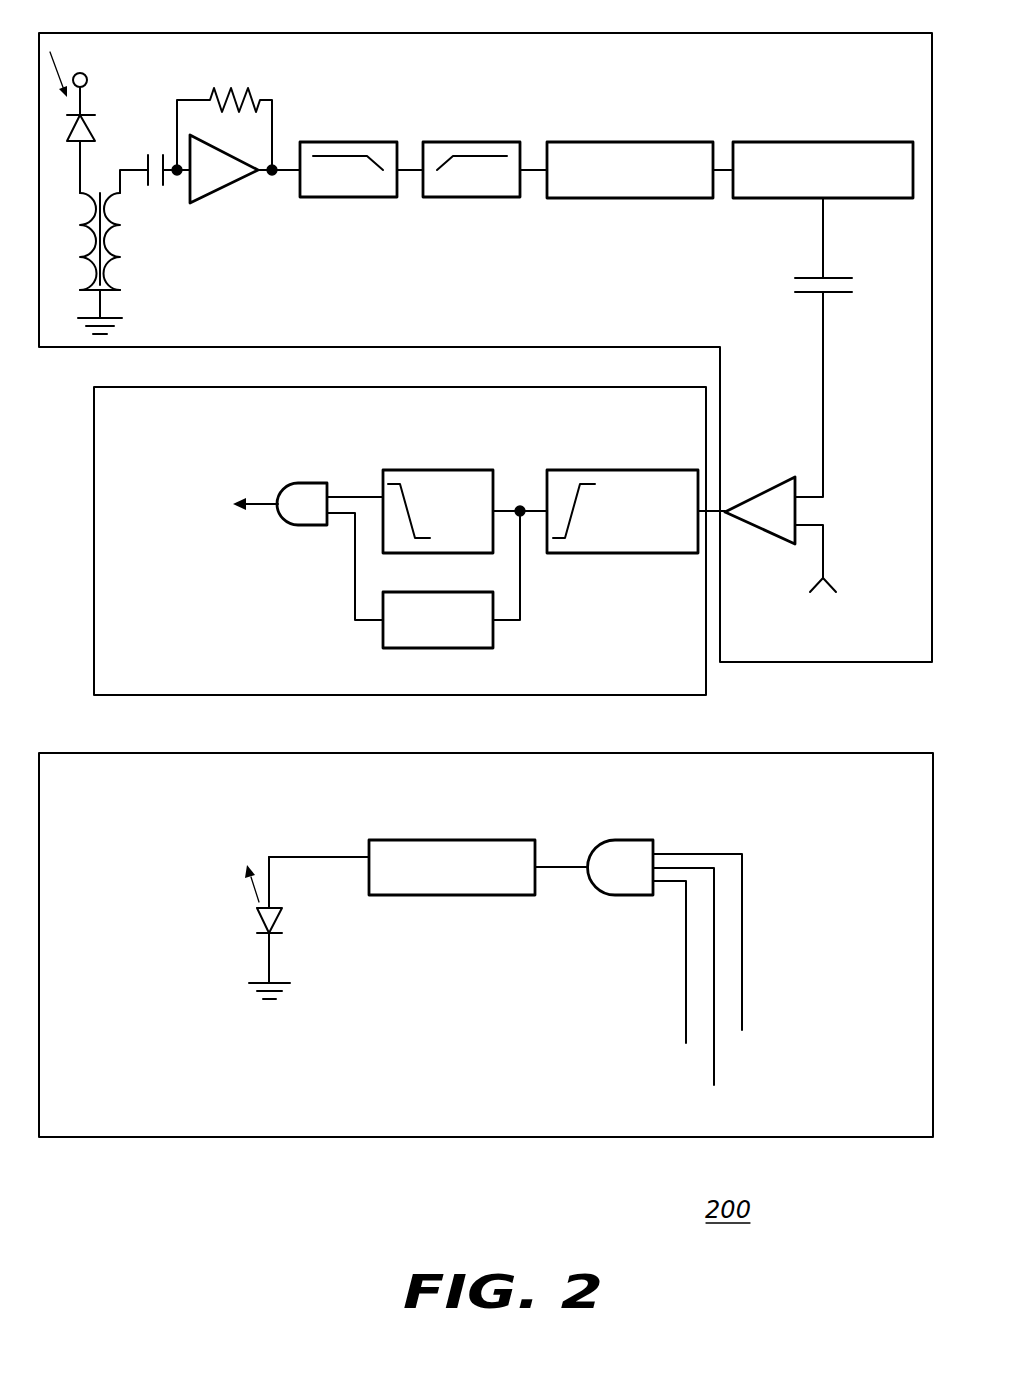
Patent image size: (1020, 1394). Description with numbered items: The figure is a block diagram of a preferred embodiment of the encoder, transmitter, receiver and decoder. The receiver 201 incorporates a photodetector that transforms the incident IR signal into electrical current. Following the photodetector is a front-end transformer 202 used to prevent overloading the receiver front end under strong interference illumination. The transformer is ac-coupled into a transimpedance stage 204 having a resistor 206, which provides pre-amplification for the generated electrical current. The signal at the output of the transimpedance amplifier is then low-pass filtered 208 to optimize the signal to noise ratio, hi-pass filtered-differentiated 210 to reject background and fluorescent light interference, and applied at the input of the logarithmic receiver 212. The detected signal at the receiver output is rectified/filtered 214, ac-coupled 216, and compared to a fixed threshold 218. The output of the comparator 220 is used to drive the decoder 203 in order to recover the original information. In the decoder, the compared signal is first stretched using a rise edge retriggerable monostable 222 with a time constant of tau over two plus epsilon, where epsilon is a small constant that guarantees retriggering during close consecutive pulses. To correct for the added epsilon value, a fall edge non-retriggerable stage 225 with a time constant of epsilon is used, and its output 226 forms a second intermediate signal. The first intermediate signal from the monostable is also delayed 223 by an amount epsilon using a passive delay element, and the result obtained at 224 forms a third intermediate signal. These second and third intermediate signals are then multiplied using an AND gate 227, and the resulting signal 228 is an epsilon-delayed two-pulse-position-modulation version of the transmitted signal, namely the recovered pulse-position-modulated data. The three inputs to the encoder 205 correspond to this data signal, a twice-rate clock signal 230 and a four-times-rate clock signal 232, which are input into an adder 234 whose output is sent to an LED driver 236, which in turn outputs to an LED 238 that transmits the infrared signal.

The receiver 201 is at (783, 33).
The front-end transformer 202 is at (99, 162).
The decoder 203 is at (608, 387).
The transimpedance stage 204 is at (228, 186).
The encoder 205 is at (775, 753).
The resistor 206 is at (255, 92).
The low-pass filter 208 is at (340, 142).
The hi-pass filter-differentiator 210 is at (455, 142).
The logarithmic receiver 212 is at (670, 142).
The rectifier/filter 214 is at (775, 142).
The ac-coupling 216 is at (825, 456).
The fixed threshold 218 is at (860, 607).
The comparator 220 is at (806, 468).
The retriggerable monostable 222 is at (588, 470).
The delay element 223 is at (493, 637).
The delayed signal output 224 is at (353, 565).
The fall edge non-retriggerable stage 225 is at (447, 470).
The non-retriggerable stage output 226 is at (350, 496).
The AND gate 227 is at (305, 482).
The resulting signal 228 is at (262, 507).
The 2×clock signal 230 is at (712, 1073).
The 4×clock signal 232 is at (742, 880).
The adder 234 is at (615, 840).
The LED driver 236 is at (323, 856).
The LED 238 is at (255, 908).